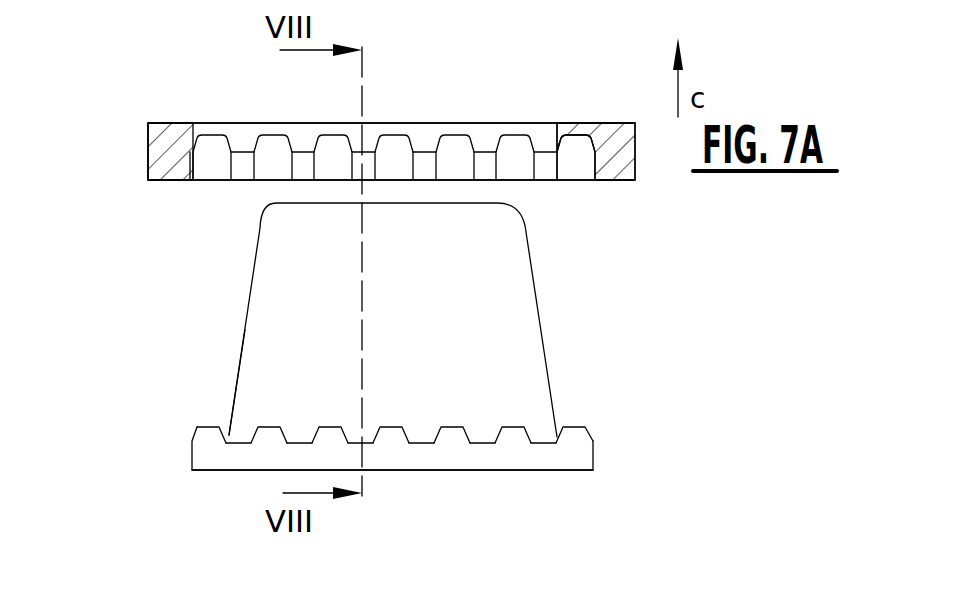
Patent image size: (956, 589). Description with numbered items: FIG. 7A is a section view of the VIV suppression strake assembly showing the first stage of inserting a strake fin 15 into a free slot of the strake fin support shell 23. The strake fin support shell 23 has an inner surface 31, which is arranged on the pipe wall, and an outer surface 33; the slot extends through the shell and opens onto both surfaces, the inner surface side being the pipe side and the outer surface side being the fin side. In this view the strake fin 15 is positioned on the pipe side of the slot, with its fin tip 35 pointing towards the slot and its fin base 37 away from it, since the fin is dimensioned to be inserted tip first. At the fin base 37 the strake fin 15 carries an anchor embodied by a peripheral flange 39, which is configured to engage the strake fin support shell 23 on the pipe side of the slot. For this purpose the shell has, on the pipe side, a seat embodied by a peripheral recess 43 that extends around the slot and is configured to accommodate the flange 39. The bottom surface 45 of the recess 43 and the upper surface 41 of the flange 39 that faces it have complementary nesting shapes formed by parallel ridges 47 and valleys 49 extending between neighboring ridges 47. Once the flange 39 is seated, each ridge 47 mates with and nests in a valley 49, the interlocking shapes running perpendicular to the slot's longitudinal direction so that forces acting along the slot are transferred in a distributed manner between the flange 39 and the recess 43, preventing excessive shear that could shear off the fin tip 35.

The strake fin 15 is at (650, 320).
The strake fin support shell 23 is at (163, 122).
The inner surface 31 is at (140, 222).
The outer surface 33 is at (200, 95).
The fin tip 35 is at (413, 257).
The fin base 37 is at (645, 507).
The peripheral flange 39 is at (545, 457).
The upper surface of the flange 41 is at (213, 375).
The peripheral recess 43 is at (223, 206).
The bottom surface of the recess 45 is at (212, 181).
The ridges 47 is at (485, 137).
The valleys 49 is at (340, 150).